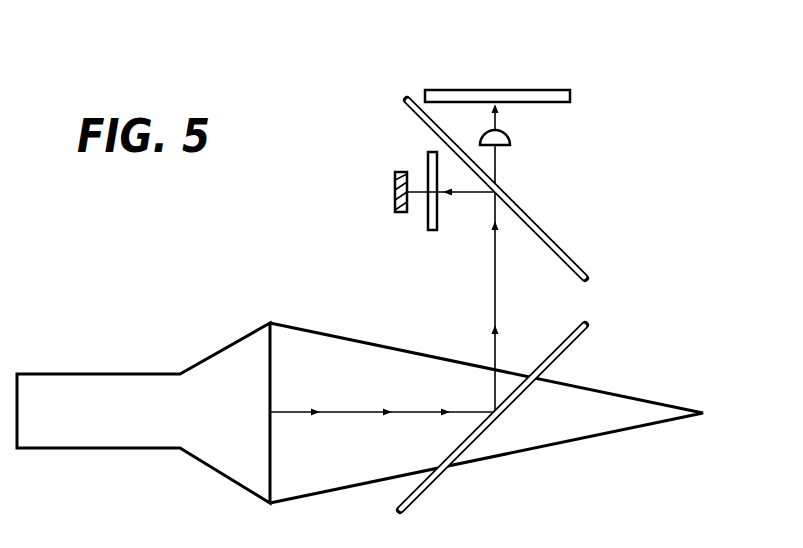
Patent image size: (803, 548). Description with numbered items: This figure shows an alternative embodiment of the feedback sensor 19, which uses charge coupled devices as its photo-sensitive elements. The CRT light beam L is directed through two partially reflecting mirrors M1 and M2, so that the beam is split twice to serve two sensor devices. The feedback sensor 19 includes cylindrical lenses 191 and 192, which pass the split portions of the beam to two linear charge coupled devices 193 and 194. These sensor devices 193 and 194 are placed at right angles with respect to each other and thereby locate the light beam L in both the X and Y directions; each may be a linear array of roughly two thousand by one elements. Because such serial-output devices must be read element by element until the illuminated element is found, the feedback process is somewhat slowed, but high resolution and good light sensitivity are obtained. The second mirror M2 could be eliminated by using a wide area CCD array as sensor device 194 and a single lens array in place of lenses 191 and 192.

The feedback sensor 19 is at (475, 144).
The cylindrical lens 191 is at (428, 218).
The cylindrical lens 192 is at (510, 142).
The linear charge coupled device 193 is at (362, 174).
The linear charge coupled device 194 is at (557, 102).
The partially reflecting mirror M1 is at (493, 430).
The partially reflecting mirror M2 is at (412, 112).
The CRT light beam L is at (382, 259).